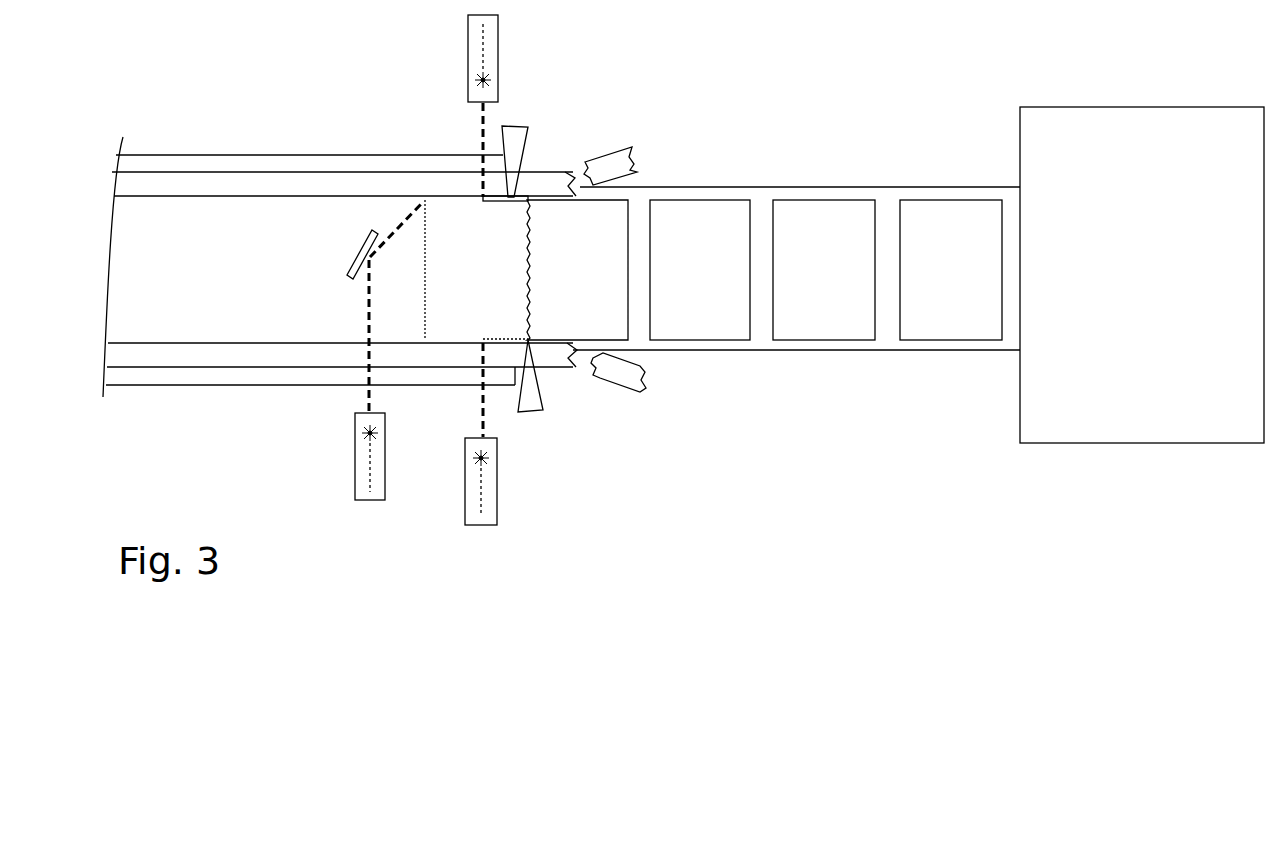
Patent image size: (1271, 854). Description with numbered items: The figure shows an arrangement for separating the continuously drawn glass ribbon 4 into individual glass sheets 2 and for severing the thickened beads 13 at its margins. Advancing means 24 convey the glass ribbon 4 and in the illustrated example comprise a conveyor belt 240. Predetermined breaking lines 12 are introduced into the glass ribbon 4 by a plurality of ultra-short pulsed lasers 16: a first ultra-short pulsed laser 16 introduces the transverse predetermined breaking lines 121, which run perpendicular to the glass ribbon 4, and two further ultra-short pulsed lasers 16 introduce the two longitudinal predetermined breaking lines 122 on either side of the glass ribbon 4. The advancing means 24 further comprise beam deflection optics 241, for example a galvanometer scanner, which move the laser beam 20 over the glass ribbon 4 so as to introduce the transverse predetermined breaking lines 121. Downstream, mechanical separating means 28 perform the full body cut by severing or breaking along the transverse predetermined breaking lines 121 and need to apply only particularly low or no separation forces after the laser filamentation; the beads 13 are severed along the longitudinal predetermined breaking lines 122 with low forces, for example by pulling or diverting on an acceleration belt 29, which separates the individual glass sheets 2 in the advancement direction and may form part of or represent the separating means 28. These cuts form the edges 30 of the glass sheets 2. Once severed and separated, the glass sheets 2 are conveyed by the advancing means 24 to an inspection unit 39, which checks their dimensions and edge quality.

The glass sheet 2 is at (965, 310).
The glass ribbon 4 is at (275, 307).
The predetermined breaking line 12 is at (461, 202).
The transverse predetermined breaking line 121 is at (418, 236).
The longitudinal predetermined breaking line 122 is at (493, 197).
The bead 13 is at (140, 365).
The ultra-short pulsed laser 16 is at (498, 30).
The laser beam 20 is at (365, 395).
The advancing means 24 is at (341, 221).
The conveyor belt 240 is at (210, 154).
The beam deflection optics 241 is at (362, 242).
The separating means 28 is at (543, 387).
The acceleration belt 29 is at (748, 352).
The edge 30 is at (877, 227).
The inspection unit 39 is at (1090, 445).